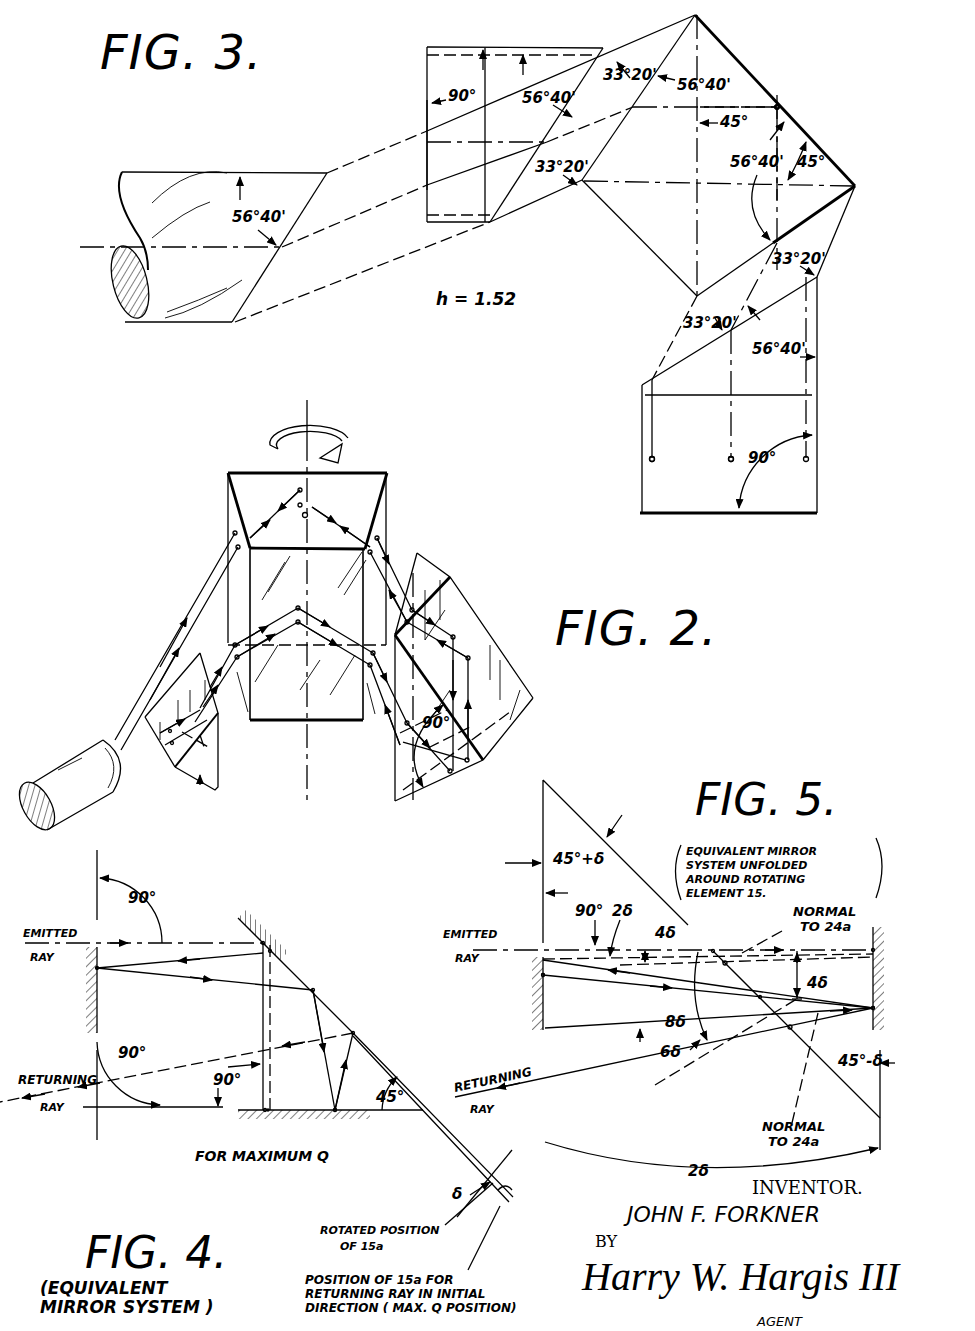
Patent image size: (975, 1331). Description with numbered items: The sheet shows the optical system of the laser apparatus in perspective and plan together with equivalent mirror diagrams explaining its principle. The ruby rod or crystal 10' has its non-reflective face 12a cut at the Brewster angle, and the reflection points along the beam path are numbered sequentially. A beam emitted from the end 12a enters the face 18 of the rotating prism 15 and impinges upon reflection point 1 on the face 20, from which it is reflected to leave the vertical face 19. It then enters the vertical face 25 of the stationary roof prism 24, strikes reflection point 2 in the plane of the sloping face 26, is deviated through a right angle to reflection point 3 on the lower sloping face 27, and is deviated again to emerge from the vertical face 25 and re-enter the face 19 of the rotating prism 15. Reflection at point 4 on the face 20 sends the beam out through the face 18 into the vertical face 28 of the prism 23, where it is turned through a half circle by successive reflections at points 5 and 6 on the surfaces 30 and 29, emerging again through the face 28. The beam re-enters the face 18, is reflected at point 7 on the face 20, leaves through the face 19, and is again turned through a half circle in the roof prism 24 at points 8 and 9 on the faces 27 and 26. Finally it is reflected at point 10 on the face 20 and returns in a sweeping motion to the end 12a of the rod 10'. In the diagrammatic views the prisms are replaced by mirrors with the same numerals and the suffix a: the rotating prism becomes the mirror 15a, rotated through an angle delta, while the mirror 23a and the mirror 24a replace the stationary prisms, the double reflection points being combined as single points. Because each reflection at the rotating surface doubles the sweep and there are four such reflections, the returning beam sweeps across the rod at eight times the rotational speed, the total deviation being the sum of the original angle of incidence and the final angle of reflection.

In FIG. 3, the reflection point 1 is at (825, 99).
In FIG. 2, the reflection point 1 is at (303, 489).
In FIG. 4, the reflection point 1 is at (268, 944).
In FIG. 5, the reflection point 1 is at (717, 949).
In FIG. 3, the reflection point 2 is at (689, 481).
In FIG. 2, the reflection point 2 is at (456, 637).
In FIG. 4, the reflection point 2 is at (268, 1106).
In FIG. 3, the reflection point 3 is at (727, 465).
In FIG. 2, the reflection point 3 is at (450, 775).
In FIG. 4, the reflection point 3 is at (262, 1113).
In FIG. 3, the reflection point 4 is at (787, 99).
In FIG. 2, the reflection point 4 is at (298, 625).
In FIG. 4, the reflection point 4 is at (273, 952).
In FIG. 5, the reflection point 4 is at (723, 966).
In FIG. 3, the reflection point 5 is at (427, 142).
In FIG. 2, the reflection point 5 is at (171, 744).
In FIG. 4, the reflection point 5 is at (99, 970).
In FIG. 5, the reflection point 5 is at (545, 977).
In FIG. 3, the reflection point 6 is at (406, 145).
In FIG. 2, the reflection point 6 is at (168, 731).
In FIG. 4, the reflection point 6 is at (97, 943).
In FIG. 5, the reflection point 6 is at (621, 982).
In FIG. 3, the reflection point 7 is at (825, 144).
In FIG. 2, the reflection point 7 is at (300, 607).
In FIG. 4, the reflection point 7 is at (316, 988).
In FIG. 5, the reflection point 7 is at (758, 995).
In FIG. 3, the reflection point 8 is at (727, 391).
In FIG. 2, the reflection point 8 is at (467, 763).
In FIG. 4, the reflection point 8 is at (338, 1107).
In FIG. 5, the reflection point 8 is at (876, 1006).
In FIG. 3, the reflection point 9 is at (689, 417).
In FIG. 2, the reflection point 9 is at (471, 658).
In FIG. 4, the reflection point 9 is at (353, 1072).
In FIG. 5, the reflection point 9 is at (807, 996).
In FIG. 3, the reflection point 10 is at (825, 99).
In FIG. 2, the reflection point 10 is at (334, 518).
In FIG. 4, the reflection point 10 is at (368, 1059).
In FIG. 5, the reflection point 10 is at (790, 1048).
In FIG. 3, the ruby rod 10' is at (203, 267).
In FIG. 2, the ruby rod 10' is at (77, 788).
In FIG. 3, the non-reflective face 12a is at (265, 275).
In FIG. 2, the non-reflective face 12a is at (126, 770).
In FIG. 3, the rotating prism 15 is at (828, 139).
In FIG. 2, the rotating prism 15 is at (378, 468).
In FIG. 4, the mirror 15a is at (246, 915).
In FIG. 5, the mirror 15a is at (767, 1034).
In FIG. 3, the face 18 is at (668, 50).
In FIG. 2, the face 18 is at (230, 512).
In FIG. 3, the vertical face 19 is at (810, 219).
In FIG. 2, the vertical face 19 is at (385, 512).
In FIG. 3, the face 20 is at (733, 47).
In FIG. 2, the face 20 is at (250, 470).
In FIG. 3, the prism 23 is at (427, 76).
In FIG. 2, the prism 23 is at (189, 786).
In FIG. 5, the prism 23 is at (876, 949).
In FIG. 4, the mirror 23a is at (105, 1010).
In FIG. 5, the mirror 23a is at (545, 1005).
In FIG. 3, the stationary roof prism 24 is at (640, 452).
In FIG. 2, the stationary roof prism 24 is at (515, 729).
In FIG. 4, the mirror 24a is at (365, 1120).
In FIG. 5, the mirror 24a is at (853, 1023).
In FIG. 3, the vertical face 25 is at (758, 312).
In FIG. 2, the vertical face 25 is at (392, 753).
In FIG. 2, the sloping face 26 is at (455, 612).
In FIG. 2, the lower sloping face 27 is at (486, 764).
In FIG. 3, the vertical face 28 is at (520, 180).
In FIG. 2, the vertical face 28 is at (213, 736).
In FIG. 2, the surface 29 is at (177, 640).
In FIG. 2, the surface 30 is at (176, 757).